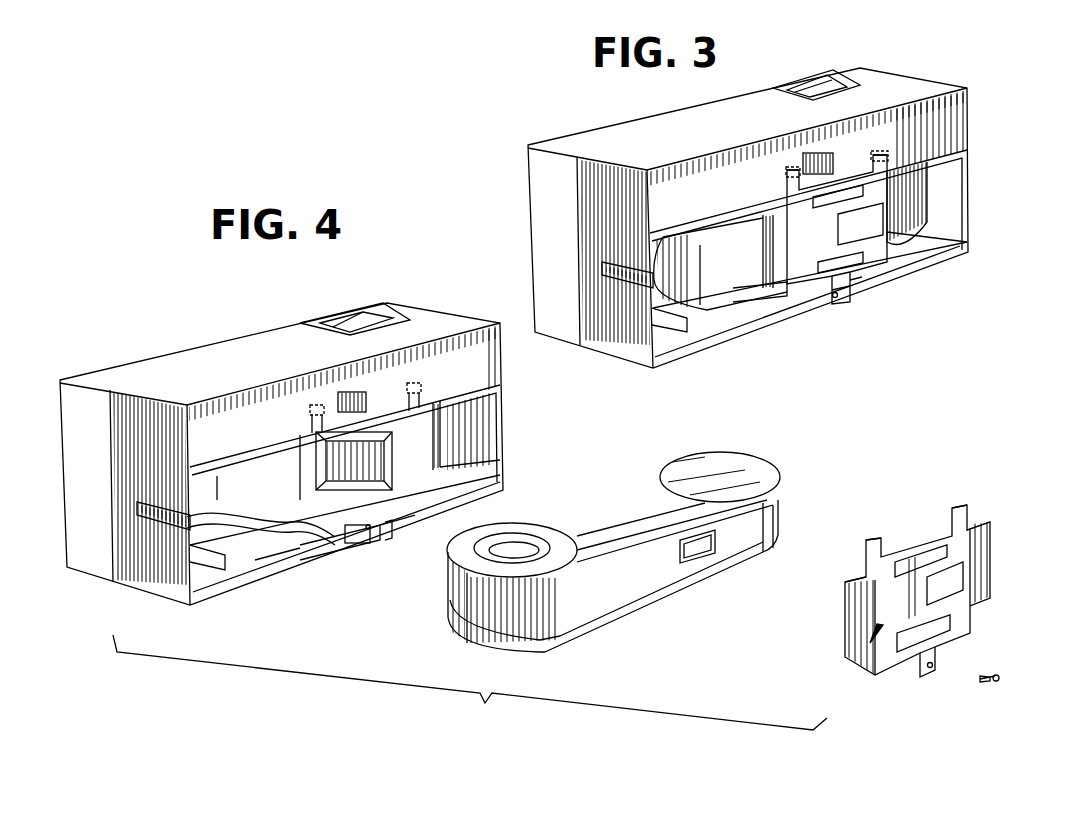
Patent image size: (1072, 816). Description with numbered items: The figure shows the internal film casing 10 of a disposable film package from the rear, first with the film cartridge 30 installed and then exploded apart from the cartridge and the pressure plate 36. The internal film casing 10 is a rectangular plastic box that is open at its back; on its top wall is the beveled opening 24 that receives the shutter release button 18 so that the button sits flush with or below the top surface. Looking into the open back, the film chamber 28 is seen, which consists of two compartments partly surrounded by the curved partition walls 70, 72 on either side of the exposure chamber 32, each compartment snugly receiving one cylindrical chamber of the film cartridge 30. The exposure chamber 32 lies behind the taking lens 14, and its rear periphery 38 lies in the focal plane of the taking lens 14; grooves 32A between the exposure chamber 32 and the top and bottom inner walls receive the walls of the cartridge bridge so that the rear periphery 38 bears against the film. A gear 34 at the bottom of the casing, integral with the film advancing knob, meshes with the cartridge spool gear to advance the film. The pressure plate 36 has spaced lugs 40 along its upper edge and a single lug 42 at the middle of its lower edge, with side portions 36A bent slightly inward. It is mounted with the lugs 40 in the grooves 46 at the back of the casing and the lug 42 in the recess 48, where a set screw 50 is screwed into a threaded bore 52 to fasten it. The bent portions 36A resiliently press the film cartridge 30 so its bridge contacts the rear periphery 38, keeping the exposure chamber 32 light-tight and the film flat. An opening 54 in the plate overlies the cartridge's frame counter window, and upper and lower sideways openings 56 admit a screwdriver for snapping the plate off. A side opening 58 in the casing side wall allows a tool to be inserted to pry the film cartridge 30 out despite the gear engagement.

In FIG. 3, the internal film casing 10 is at (942, 70).
In FIG. 4, the internal film casing 10 is at (203, 338).
In FIG. 4, the taking lens 14 is at (340, 445).
In FIG. 3, the shutter release button 18 is at (821, 82).
In FIG. 4, the shutter release button 18 is at (354, 318).
In FIG. 3, the opening 24 is at (793, 84).
In FIG. 4, the opening 24 is at (330, 313).
In FIG. 3, the film chamber 28 is at (945, 198).
In FIG. 4, the film chamber 28 is at (482, 433).
In FIG. 3, the film cartridge 30 is at (716, 298).
In FIG. 4, the film cartridge 30 is at (598, 598).
In FIG. 4, the exposure chamber 32 is at (400, 502).
In FIG. 4, the grooves 32A is at (300, 550).
In FIG. 4, the gear 34 is at (205, 514).
In FIG. 3, the pressure plate 36 is at (801, 298).
In FIG. 4, the pressure plate 36 is at (872, 652).
In FIG. 3, the side bent portions 36A is at (768, 240).
In FIG. 4, the side bent portions 36A is at (845, 614).
In FIG. 4, the rear periphery 38 is at (410, 506).
In FIG. 3, the lugs 40 is at (786, 190).
In FIG. 4, the lugs 40 is at (873, 537).
In FIG. 3, the lug 42 is at (853, 298).
In FIG. 4, the lug 42 is at (930, 676).
In FIG. 3, the grooves 46 is at (784, 172).
In FIG. 4, the grooves 46 is at (308, 412).
In FIG. 3, the recess 48 is at (847, 292).
In FIG. 4, the recess 48 is at (392, 542).
In FIG. 3, the set screw 50 is at (835, 299).
In FIG. 4, the set screw 50 is at (1000, 676).
In FIG. 3, the threaded bore 52 is at (850, 226).
In FIG. 4, the threaded bore 52 is at (366, 548).
In FIG. 3, the opening 54 is at (856, 286).
In FIG. 4, the opening 54 is at (950, 598).
In FIG. 3, the upper and lower openings 56 is at (843, 196).
In FIG. 4, the upper and lower openings 56 is at (920, 560).
In FIG. 3, the side opening 58 is at (622, 290).
In FIG. 4, the side opening 58 is at (157, 528).
In FIG. 4, the curved partition wall 70 is at (255, 497).
In FIG. 4, the curved partition wall 72 is at (431, 447).